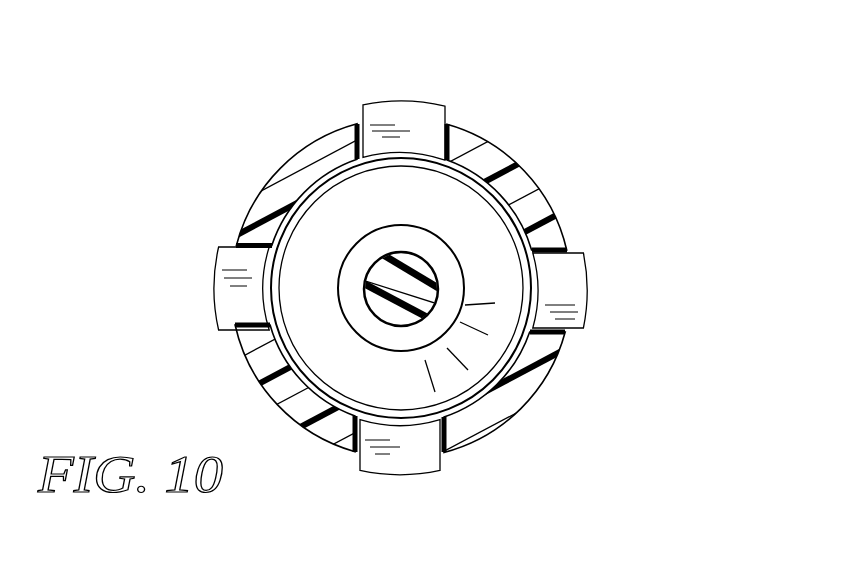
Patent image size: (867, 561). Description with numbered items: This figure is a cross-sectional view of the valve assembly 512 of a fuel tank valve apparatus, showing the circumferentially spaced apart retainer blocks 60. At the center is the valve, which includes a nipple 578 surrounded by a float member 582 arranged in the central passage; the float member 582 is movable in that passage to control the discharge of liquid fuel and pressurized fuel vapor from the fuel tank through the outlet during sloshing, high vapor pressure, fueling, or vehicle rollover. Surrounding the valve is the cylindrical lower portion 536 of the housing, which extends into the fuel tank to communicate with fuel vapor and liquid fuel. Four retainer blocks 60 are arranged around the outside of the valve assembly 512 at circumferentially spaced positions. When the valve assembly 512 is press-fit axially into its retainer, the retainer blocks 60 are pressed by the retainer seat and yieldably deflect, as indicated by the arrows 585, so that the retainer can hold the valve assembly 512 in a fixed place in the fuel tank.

The valve assembly 512 is at (407, 280).
The cylindrical lower portion 536 is at (527, 210).
The retainer blocks 60 is at (409, 116).
The float member 582 is at (307, 341).
The arrows 585 is at (402, 180).
The nipple 578 is at (428, 268).